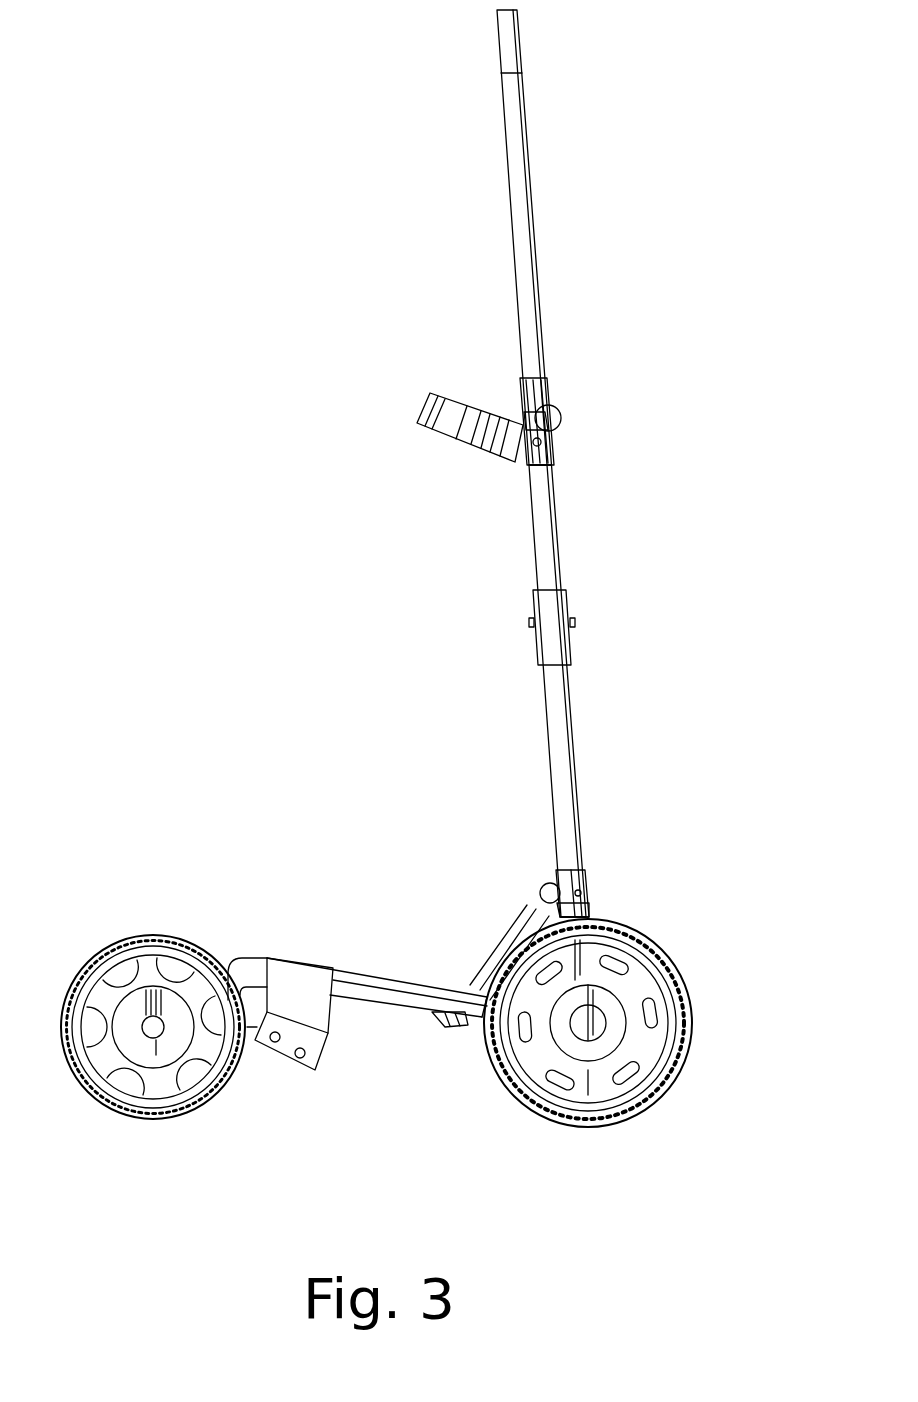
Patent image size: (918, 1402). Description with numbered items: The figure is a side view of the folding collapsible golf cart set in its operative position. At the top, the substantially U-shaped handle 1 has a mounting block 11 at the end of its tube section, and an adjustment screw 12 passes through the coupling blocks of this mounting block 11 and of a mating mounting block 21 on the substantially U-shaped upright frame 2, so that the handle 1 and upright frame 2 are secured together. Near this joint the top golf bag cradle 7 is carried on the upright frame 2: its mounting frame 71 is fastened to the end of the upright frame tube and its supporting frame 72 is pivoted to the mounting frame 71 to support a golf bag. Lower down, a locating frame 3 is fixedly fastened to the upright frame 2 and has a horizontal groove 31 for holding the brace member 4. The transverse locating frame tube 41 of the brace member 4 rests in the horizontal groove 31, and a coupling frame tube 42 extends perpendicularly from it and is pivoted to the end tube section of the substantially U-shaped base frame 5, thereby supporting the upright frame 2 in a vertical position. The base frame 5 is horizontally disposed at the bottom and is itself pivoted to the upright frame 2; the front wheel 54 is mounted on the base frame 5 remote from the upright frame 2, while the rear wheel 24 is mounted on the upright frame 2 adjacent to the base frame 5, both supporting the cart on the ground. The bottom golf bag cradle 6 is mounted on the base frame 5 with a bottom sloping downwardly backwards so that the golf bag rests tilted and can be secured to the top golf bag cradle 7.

The handle 1 is at (492, 276).
The mounting block 11 is at (522, 382).
The adjustment screw 12 is at (562, 415).
The upright frame 2 is at (535, 742).
The mounting block 21 is at (518, 420).
The locating frame 3 is at (639, 847).
The horizontal groove 31 is at (583, 903).
The brace member 4 is at (481, 1024).
The transverse locating frame tube 41 is at (540, 886).
The coupling frame tube 42 is at (441, 1022).
The base frame 5 is at (358, 950).
The front wheel 54 is at (153, 935).
The bottom golf bag cradle 6 is at (332, 1064).
The top golf bag cradle 7 is at (439, 496).
The mounting frame 71 is at (498, 450).
The supporting frame 72 is at (430, 430).
The rear wheel 24 is at (693, 1020).